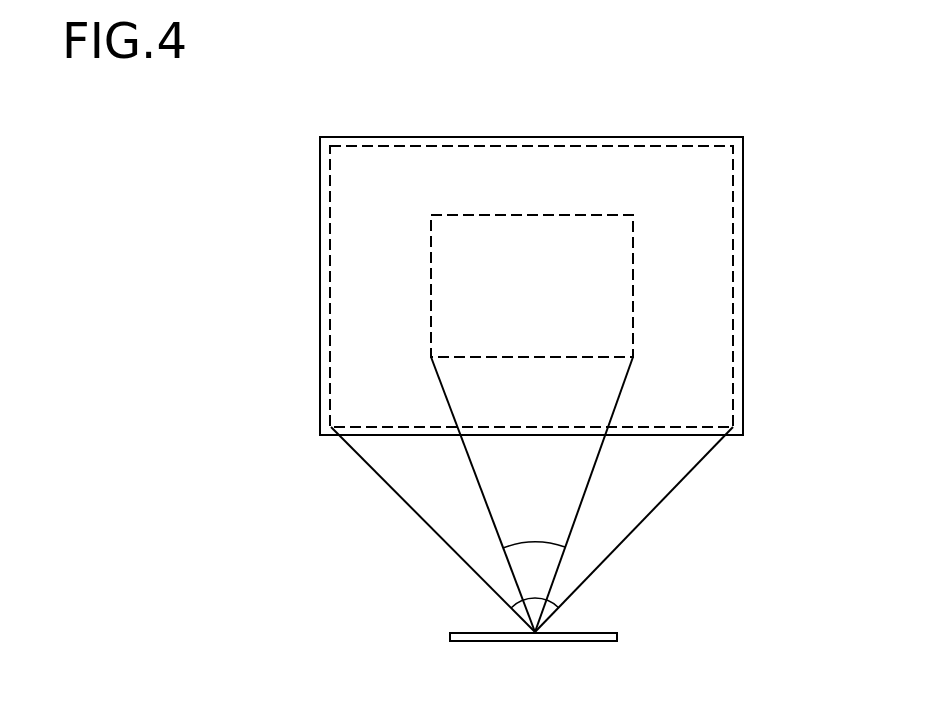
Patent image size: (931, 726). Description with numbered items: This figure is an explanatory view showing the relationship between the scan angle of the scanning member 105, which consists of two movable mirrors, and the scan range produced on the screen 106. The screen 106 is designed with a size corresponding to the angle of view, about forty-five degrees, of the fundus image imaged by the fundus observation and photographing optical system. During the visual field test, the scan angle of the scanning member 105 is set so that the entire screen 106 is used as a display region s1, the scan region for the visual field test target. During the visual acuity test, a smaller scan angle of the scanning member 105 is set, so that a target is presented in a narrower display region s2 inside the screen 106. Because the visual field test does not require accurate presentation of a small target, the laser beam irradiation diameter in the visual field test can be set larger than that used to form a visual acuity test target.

The screen 106 is at (668, 137).
The scanning member 105 is at (618, 636).
The display region s1 is at (331, 242).
The display region s2 is at (627, 272).